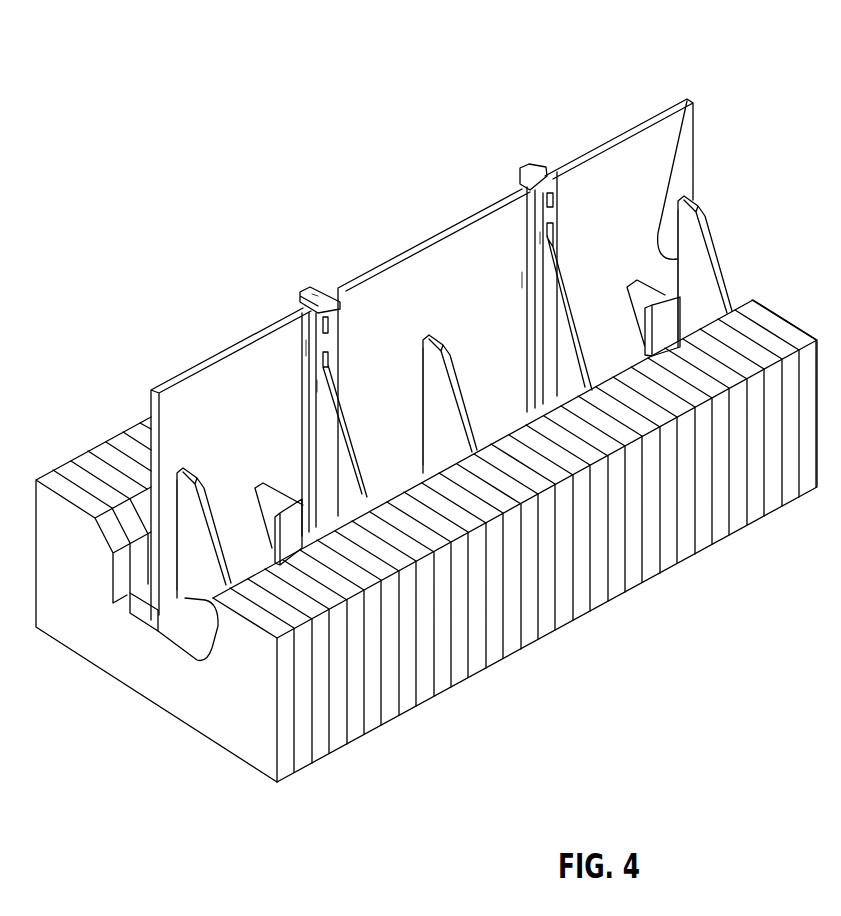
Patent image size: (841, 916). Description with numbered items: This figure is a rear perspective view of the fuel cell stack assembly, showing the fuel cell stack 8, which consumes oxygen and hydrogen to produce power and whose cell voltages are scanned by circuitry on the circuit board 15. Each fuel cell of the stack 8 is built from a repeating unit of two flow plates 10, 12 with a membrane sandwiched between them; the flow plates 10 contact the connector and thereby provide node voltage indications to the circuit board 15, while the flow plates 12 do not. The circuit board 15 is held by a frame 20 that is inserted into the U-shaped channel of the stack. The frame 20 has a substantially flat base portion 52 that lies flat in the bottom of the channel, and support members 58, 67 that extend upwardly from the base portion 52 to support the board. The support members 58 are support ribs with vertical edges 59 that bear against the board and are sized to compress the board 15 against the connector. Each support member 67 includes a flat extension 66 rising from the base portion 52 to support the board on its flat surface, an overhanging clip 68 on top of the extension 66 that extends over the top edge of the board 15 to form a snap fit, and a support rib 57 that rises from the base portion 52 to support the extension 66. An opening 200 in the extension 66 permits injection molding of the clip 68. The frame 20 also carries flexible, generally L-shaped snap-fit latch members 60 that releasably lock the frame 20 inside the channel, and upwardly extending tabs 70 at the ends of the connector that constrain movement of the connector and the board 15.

The fuel cell stack 8 is at (612, 614).
The flow plate 10 is at (365, 733).
The flow plate 12 is at (383, 723).
The circuit board 15 is at (705, 150).
The frame 20 is at (323, 288).
The base portion 52 is at (192, 630).
The support rib 57 is at (556, 317).
The support member 58 is at (185, 598).
The vertical edge 59 is at (175, 507).
The snap-fit latch member 60 is at (282, 485).
The flat extension 66 is at (308, 348).
The support member 67 is at (297, 385).
The overhanging clip 68 is at (305, 288).
The tab 70 is at (138, 615).
The opening 200 is at (549, 193).